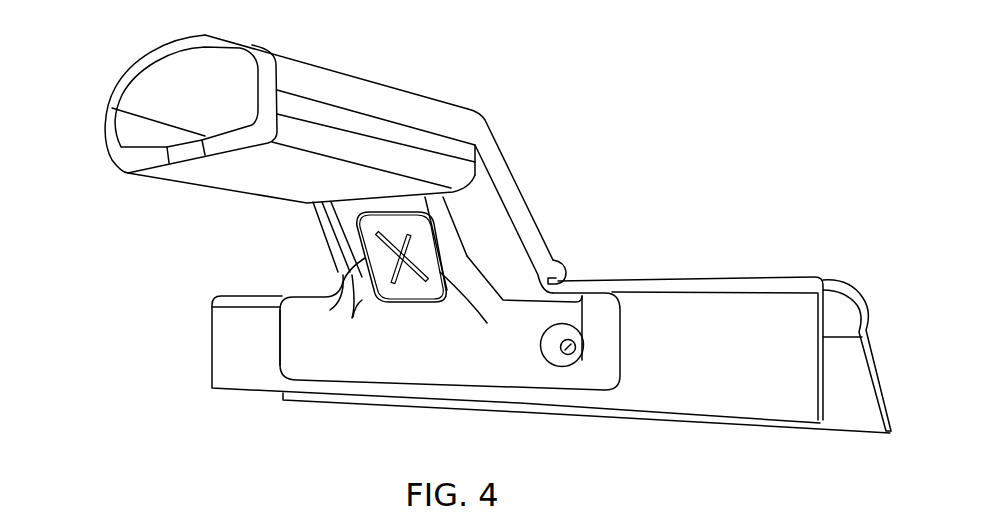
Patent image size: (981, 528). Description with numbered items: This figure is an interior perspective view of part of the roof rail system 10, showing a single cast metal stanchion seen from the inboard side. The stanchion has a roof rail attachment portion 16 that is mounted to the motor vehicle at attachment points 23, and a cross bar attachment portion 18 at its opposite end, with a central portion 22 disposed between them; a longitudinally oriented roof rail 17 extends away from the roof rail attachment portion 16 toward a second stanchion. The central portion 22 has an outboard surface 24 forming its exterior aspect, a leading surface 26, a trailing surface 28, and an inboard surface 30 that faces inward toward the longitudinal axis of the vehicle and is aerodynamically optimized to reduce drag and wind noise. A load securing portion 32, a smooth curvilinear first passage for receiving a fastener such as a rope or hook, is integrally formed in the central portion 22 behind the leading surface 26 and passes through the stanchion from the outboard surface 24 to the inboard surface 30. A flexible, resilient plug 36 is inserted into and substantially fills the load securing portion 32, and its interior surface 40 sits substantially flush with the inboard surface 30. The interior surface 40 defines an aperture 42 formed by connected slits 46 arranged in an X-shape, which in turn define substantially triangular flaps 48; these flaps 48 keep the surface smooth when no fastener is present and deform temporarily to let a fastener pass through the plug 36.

The roof rail system 10 is at (672, 118).
The roof rail attachment portion 16 is at (467, 352).
The roof rail 17 is at (733, 290).
The cross bar attachment portion 18 is at (150, 60).
The central portion 22 is at (535, 180).
The attachment points 23 is at (567, 345).
The outboard surface 24 is at (515, 168).
The leading surface 26 is at (572, 262).
The trailing surface 28 is at (385, 262).
The inboard surface 30 is at (325, 340).
The load securing portion 32 is at (356, 231).
The plug 36 is at (383, 290).
The interior surface 40 is at (388, 212).
The apertures 42 is at (387, 282).
The slits 46 is at (425, 283).
The triangular flaps 48 is at (404, 280).